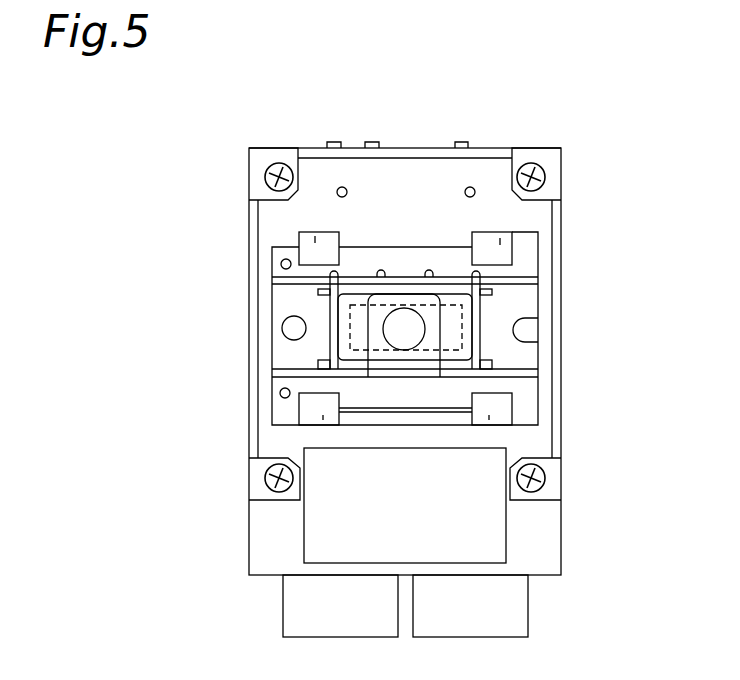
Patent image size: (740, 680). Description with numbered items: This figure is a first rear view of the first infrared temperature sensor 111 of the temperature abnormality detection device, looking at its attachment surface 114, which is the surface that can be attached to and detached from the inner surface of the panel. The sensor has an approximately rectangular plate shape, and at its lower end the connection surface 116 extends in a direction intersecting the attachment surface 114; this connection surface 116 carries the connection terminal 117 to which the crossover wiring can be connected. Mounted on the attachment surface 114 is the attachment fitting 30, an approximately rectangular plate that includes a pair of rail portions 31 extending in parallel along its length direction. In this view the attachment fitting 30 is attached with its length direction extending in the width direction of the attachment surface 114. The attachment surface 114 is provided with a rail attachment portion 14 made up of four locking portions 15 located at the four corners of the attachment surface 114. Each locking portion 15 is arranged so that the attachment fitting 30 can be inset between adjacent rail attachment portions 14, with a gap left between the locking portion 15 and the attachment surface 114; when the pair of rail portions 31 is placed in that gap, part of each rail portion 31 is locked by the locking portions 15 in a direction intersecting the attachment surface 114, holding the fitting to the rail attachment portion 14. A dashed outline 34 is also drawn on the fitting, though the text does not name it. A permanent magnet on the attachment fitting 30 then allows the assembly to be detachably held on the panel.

The first infrared temperature sensor 111 is at (587, 114).
The attachment surface 114 is at (404, 187).
The rail attachment portion 14 is at (322, 231).
The locking portion 15 is at (315, 243).
The attachment fitting 30 is at (522, 297).
The rail portion 31 is at (277, 403).
The recess (hidden) 34 is at (350, 306).
The connection surface 116 is at (266, 578).
The connection terminal 117 is at (528, 607).